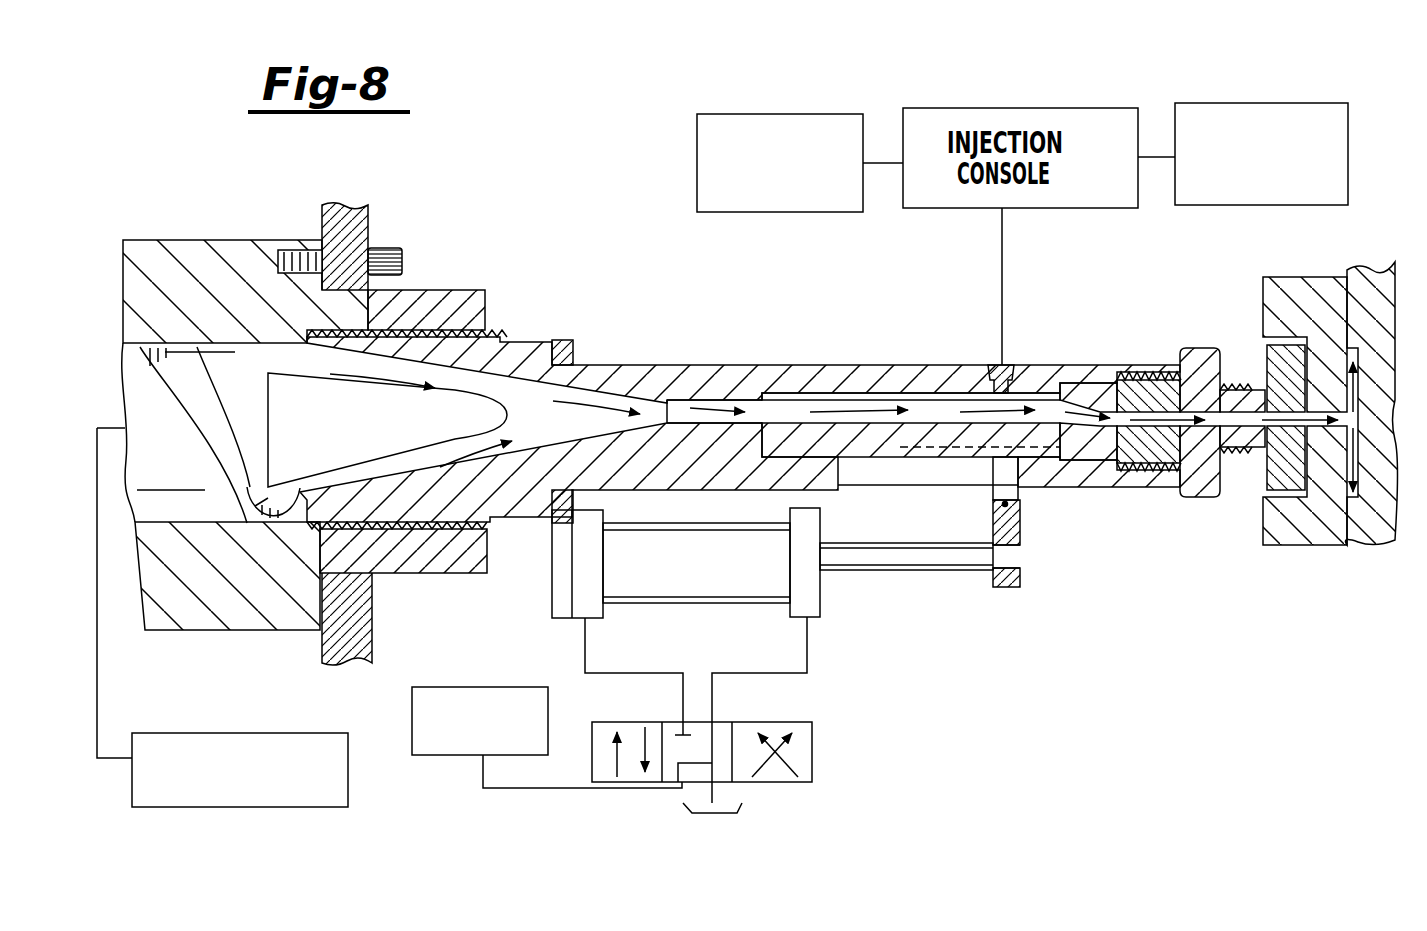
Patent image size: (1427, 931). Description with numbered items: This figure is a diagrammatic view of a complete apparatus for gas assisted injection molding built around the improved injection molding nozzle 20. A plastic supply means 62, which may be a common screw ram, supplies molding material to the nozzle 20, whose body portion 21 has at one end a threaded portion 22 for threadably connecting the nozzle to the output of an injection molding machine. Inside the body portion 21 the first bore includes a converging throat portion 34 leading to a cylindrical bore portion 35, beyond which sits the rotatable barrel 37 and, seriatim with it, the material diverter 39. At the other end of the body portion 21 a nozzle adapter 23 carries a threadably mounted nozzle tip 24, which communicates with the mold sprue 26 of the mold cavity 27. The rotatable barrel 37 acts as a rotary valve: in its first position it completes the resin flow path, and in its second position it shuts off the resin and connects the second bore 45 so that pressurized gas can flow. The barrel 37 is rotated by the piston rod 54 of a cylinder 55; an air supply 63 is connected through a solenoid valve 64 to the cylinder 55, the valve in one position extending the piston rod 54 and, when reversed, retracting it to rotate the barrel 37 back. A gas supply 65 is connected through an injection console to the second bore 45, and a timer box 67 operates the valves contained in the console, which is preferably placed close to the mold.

The injection molding nozzle 20 is at (748, 358).
The body portion 21 is at (650, 362).
The threaded portion 22 is at (430, 325).
The nozzle adapter 23 is at (1145, 385).
The nozzle tip 24 is at (1243, 452).
The mold sprue 26 is at (1268, 547).
The mold cavity 27 is at (1351, 335).
The converging throat portion 34 is at (402, 486).
The cylindrical bore portion 35 is at (698, 398).
The rotatable barrel 37 is at (860, 458).
The material diverter 39 is at (1090, 380).
The second bore 45 is at (1000, 364).
The piston rod 54 is at (886, 558).
The cylinder 55 is at (705, 566).
The plastic supply means 62 is at (245, 733).
The air supply 63 is at (486, 655).
The solenoid valve 64 is at (815, 735).
The gas supply 65 is at (1298, 103).
The timer box 67 is at (790, 114).